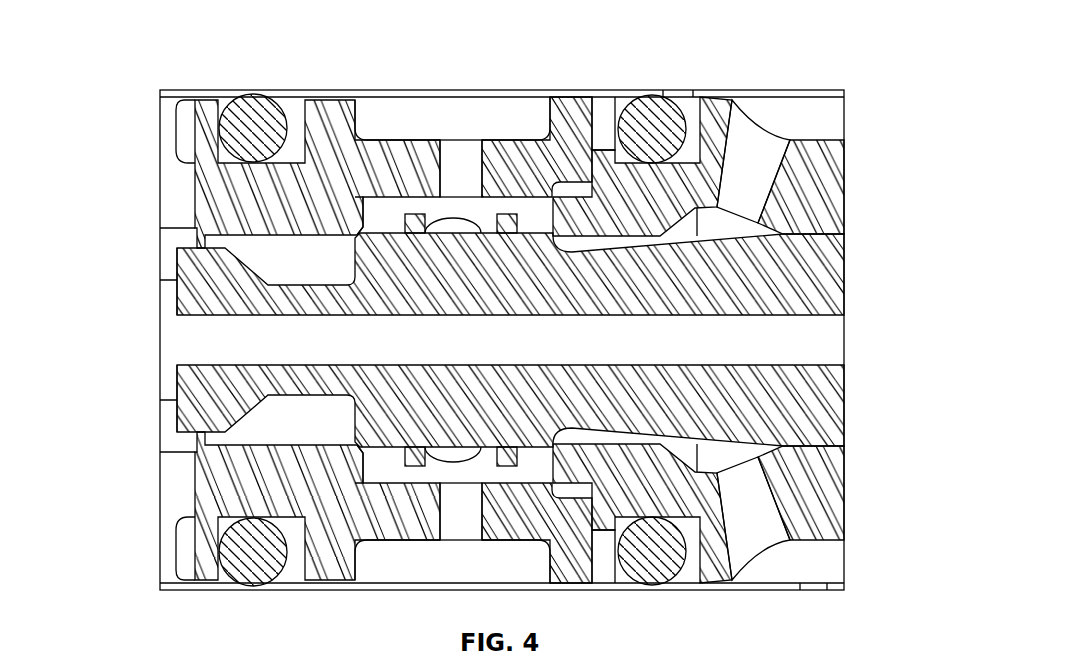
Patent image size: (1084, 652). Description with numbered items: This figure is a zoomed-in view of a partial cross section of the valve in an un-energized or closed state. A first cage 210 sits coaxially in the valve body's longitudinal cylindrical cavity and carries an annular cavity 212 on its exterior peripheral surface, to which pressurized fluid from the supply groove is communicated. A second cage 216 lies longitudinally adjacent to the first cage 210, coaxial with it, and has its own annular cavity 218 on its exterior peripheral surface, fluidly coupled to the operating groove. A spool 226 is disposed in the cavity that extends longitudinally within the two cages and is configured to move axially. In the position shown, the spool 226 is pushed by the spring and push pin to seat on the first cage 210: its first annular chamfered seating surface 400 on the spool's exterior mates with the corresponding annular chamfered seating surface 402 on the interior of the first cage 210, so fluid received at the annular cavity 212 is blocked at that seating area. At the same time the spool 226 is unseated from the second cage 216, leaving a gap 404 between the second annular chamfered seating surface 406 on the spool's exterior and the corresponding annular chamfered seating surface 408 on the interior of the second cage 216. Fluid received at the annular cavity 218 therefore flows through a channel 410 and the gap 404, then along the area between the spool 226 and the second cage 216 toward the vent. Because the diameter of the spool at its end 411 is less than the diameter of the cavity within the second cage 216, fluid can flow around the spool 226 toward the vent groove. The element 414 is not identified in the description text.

The second cage 216 is at (332, 113).
The gap 404 is at (363, 223).
The channel 410 is at (452, 147).
The annular cavity 218 is at (516, 118).
The first cage 210 is at (605, 112).
The annular chamfered seating surface 402 is at (560, 230).
The annular cavity 212 is at (813, 118).
The pin 414 is at (779, 376).
The first annular chamfered seating surface 400 is at (550, 242).
The spool 226 is at (540, 393).
The annular chamfered seating surface 408 is at (360, 241).
The second annular chamfered seating surface 406 is at (378, 241).
The end 411 is at (178, 413).